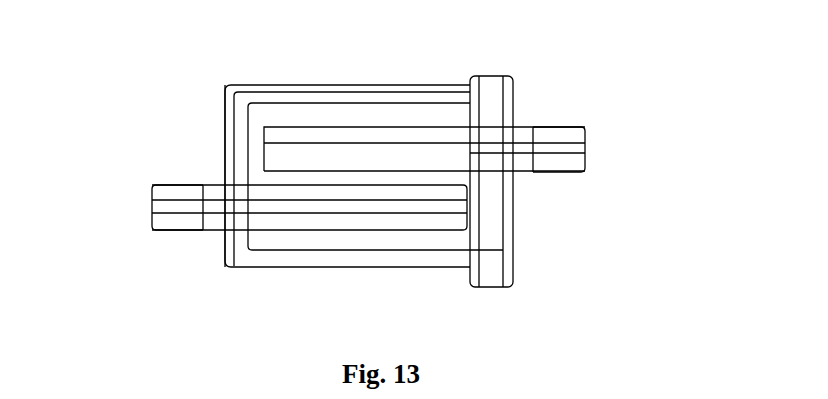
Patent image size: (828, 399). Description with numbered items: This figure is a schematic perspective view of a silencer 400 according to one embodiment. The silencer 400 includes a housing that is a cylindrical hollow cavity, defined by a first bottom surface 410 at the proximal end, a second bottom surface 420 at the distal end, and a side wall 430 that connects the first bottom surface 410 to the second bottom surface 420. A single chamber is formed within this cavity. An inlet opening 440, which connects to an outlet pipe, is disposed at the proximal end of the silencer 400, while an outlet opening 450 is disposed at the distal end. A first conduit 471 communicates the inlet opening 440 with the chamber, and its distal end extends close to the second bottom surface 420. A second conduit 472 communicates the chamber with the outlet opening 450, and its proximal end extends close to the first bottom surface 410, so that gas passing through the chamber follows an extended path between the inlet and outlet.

The silencer 400 is at (655, 47).
The first bottom surface 410 is at (224, 142).
The second bottom surface 420 is at (508, 208).
The side wall 430 is at (368, 88).
The inlet opening 440 is at (152, 186).
The outlet opening 450 is at (587, 126).
The first conduit 471 is at (273, 223).
The second conduit 472 is at (434, 127).